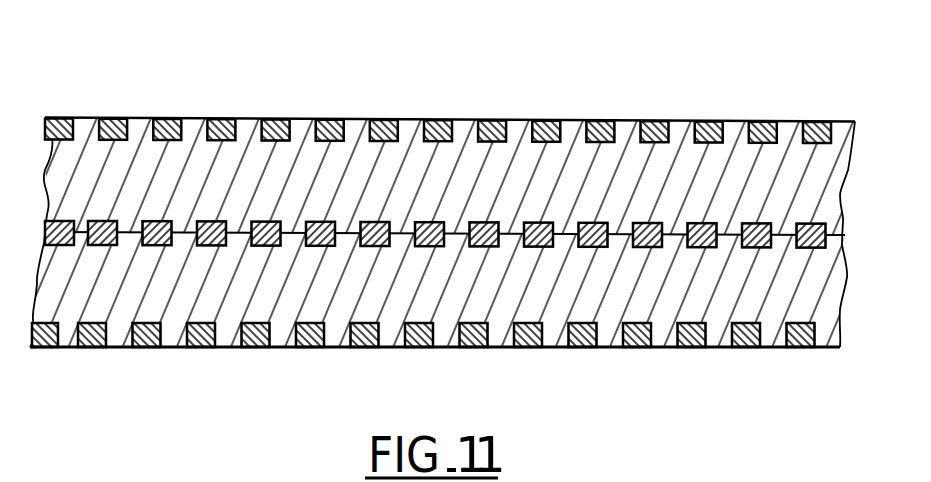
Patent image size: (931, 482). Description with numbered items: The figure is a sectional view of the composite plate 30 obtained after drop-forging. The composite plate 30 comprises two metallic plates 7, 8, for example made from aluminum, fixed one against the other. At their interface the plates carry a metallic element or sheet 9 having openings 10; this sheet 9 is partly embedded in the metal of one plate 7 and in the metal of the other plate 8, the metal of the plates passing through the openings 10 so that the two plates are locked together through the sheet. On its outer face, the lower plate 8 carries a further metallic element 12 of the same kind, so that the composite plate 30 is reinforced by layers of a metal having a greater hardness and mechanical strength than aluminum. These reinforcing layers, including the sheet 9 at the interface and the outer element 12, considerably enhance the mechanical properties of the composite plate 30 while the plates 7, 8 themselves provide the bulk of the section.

The metallic plate 7 is at (818, 166).
The metallic plate 8 is at (798, 287).
The metallic element or sheet 9 is at (600, 119).
The openings 10 is at (340, 223).
The metallic element 12 is at (585, 350).
The composite plate 30 is at (534, 95).